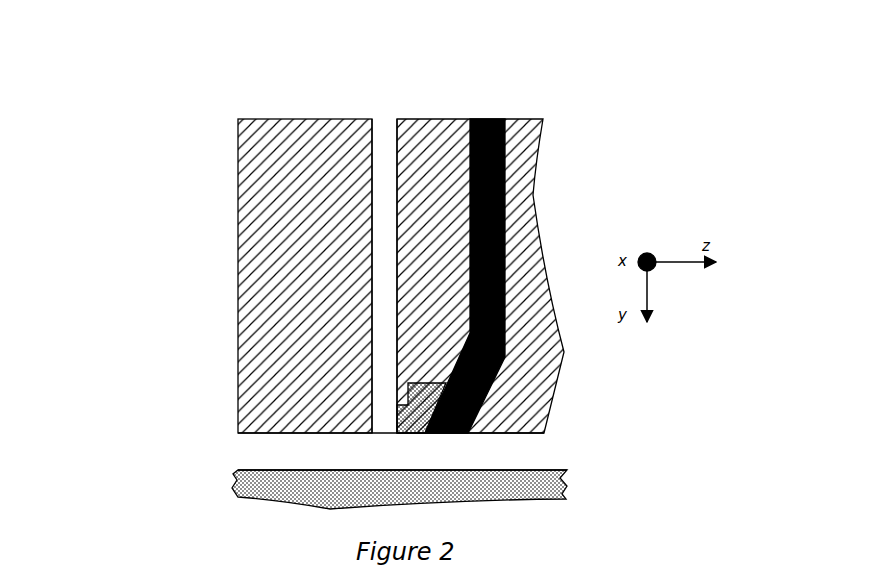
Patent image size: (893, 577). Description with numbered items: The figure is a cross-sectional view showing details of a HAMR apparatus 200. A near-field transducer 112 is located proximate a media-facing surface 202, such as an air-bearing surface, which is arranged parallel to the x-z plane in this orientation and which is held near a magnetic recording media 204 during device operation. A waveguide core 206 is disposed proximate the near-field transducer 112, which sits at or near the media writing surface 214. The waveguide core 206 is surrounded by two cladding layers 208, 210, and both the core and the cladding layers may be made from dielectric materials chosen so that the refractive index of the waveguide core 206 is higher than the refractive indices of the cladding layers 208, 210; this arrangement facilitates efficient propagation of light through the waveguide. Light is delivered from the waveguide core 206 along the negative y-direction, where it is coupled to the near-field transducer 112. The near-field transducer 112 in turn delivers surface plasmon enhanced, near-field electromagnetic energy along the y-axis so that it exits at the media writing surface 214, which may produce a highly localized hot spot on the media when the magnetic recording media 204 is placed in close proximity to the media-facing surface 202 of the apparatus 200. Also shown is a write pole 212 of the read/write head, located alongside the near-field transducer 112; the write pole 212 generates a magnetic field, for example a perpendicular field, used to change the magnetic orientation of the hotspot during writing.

The HAMR apparatus 200 is at (160, 117).
The media-facing surface 202 is at (253, 435).
The magnetic recording media 204 is at (562, 468).
The waveguide core 206 is at (390, 222).
The cladding layer 208 is at (245, 152).
The cladding layer 210 is at (423, 119).
The write pole 212 is at (487, 119).
The media writing surface 214 is at (520, 470).
The near-field transducer 112 is at (405, 434).